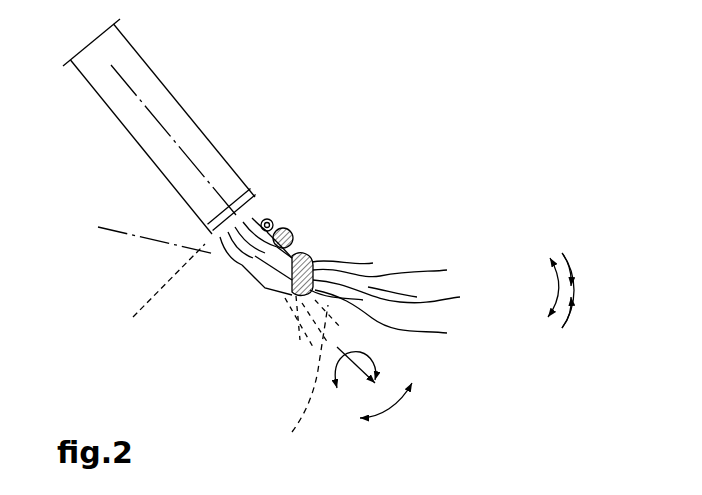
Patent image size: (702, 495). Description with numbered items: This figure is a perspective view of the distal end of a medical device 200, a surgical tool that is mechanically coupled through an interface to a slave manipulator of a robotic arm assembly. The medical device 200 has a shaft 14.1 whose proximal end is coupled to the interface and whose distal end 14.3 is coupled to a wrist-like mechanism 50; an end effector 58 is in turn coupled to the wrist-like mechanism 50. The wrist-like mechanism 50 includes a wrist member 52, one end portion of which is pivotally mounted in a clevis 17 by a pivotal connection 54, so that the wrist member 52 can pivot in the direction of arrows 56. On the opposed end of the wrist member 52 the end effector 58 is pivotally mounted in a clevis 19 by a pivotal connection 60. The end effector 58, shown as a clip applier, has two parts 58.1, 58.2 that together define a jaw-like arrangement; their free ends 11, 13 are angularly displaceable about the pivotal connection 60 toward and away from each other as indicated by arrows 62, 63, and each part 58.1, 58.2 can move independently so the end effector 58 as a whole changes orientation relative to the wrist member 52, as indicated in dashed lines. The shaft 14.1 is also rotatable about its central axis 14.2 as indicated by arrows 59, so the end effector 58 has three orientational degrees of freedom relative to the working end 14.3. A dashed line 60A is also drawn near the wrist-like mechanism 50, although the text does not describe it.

The medical device 200 is at (345, 112).
The shaft 14.1 is at (105, 138).
The central axis 14.2 is at (295, 371).
The distal end 14.3 is at (178, 237).
The laser beam axis 60A is at (148, 290).
The clevis 17 is at (225, 275).
The wrist member 52 is at (272, 285).
The pivotal connection 54 is at (269, 219).
The wrist-like mechanism 50 is at (303, 223).
The clevis 19 is at (320, 243).
The end effector 58 is at (373, 252).
The pivotal connection 60 is at (297, 292).
The free end 11 is at (373, 263).
The part 58.1 is at (401, 273).
The free end 13 is at (401, 295).
The part 58.2 is at (401, 318).
The arrows 59 is at (370, 354).
The arrows 56 is at (384, 398).
The arrows 62 is at (572, 268).
The arrows 63 is at (553, 293).